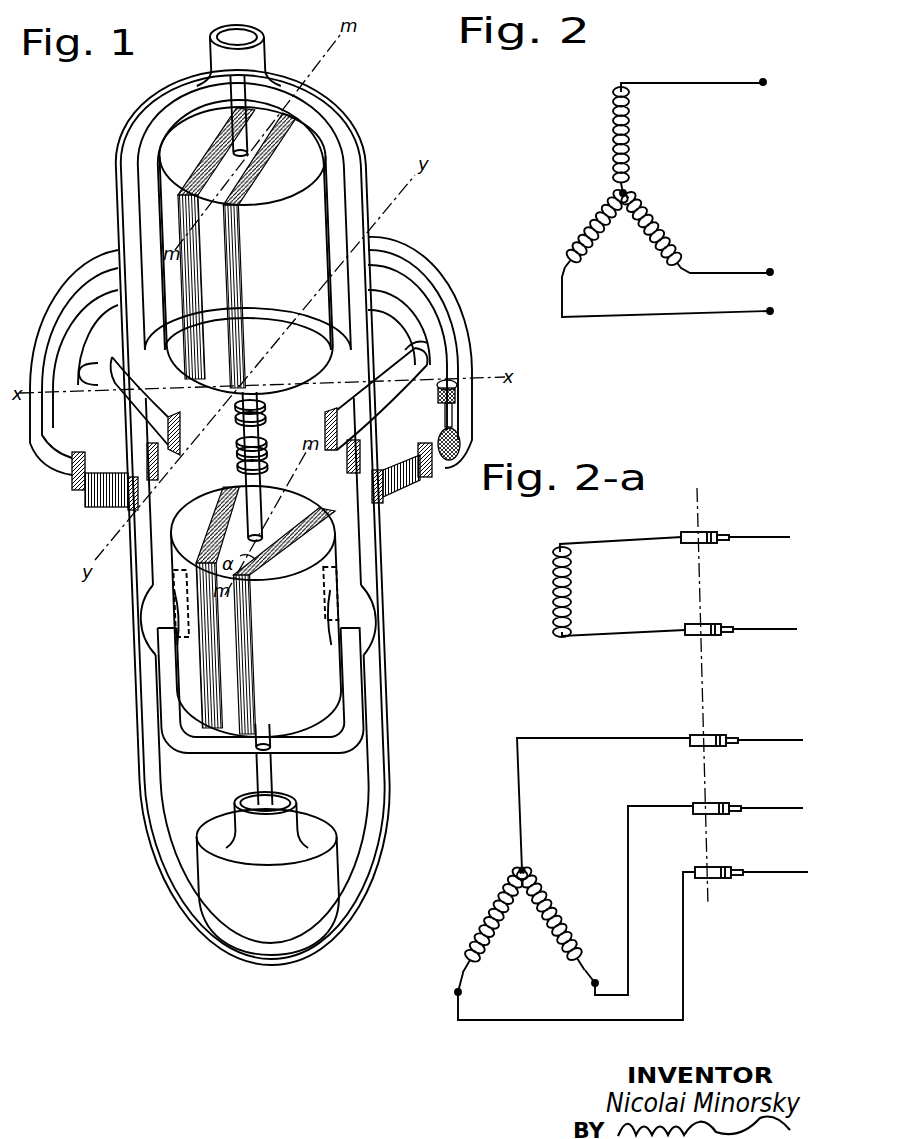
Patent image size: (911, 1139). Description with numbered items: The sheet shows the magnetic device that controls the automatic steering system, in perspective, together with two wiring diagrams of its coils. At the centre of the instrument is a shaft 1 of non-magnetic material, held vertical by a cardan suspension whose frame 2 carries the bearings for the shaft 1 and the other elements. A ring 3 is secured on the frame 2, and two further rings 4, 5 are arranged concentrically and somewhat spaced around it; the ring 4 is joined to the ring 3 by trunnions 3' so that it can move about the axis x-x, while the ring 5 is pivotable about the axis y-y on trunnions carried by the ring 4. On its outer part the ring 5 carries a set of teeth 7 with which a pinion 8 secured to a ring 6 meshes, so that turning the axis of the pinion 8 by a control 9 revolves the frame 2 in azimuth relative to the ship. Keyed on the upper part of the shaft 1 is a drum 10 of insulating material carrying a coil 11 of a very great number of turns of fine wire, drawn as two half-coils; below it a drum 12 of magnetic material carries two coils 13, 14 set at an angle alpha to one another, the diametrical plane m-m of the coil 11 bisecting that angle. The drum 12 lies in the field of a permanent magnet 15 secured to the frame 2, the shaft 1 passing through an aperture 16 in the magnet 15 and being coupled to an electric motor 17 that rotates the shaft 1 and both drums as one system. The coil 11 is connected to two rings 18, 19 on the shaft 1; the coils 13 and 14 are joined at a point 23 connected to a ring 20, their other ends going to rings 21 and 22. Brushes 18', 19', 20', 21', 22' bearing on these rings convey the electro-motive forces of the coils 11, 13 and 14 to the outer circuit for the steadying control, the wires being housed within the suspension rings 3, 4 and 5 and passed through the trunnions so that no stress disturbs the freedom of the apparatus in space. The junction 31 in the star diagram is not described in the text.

In FIG. 1, the shaft 1 is at (238, 127).
In FIG. 1, the frame 2 is at (343, 134).
In FIG. 1, the ring 3 is at (269, 401).
In FIG. 1, the trunnions 3' is at (253, 356).
In FIG. 1, the ring 4 is at (397, 274).
In FIG. 1, the ring 5 is at (412, 289).
In FIG. 1, the ring 6 is at (84, 284).
In FIG. 1, the set of teeth 7 is at (400, 490).
In FIG. 1, the pinion 8 is at (456, 463).
In FIG. 1, the control 9 is at (460, 393).
In FIG. 1, the drum 10 is at (292, 266).
In FIG. 1, the coil 11 is at (271, 148).
In FIG. 2, the coil 11 is at (632, 162).
In FIG. 2A, the coil 11 is at (576, 587).
In FIG. 1, the drum 12 is at (298, 631).
In FIG. 1, the coil 13 is at (217, 520).
In FIG. 2, the coil 13 is at (584, 238).
In FIG. 2A, the coil 13 is at (484, 930).
In FIG. 1, the coil 14 is at (337, 537).
In FIG. 2, the coil 14 is at (668, 235).
In FIG. 2A, the coil 14 is at (569, 921).
In FIG. 1, the permanent magnet 15 is at (162, 634).
In FIG. 1, the aperture 16 is at (267, 731).
In FIG. 1, the electric motor 17 is at (312, 912).
In FIG. 1, the ring 18 is at (272, 401).
In FIG. 2A, the ring 18 is at (735, 525).
In FIG. 2A, the brush 18' is at (740, 554).
In FIG. 1, the ring 19 is at (272, 418).
In FIG. 2A, the ring 19 is at (741, 615).
In FIG. 2A, the brush 19' is at (746, 643).
In FIG. 1, the ring 20 is at (266, 473).
In FIG. 2A, the ring 20 is at (660, 790).
In FIG. 2A, the brush 20' is at (754, 756).
In FIG. 1, the ring 21 is at (278, 442).
In FIG. 2A, the ring 21 is at (699, 885).
In FIG. 2A, the brush 21' is at (757, 822).
In FIG. 1, the ring 22 is at (233, 443).
In FIG. 2A, the ring 22 is at (633, 933).
In FIG. 2A, the brush 22' is at (759, 892).
In FIG. 2A, the point 23 is at (527, 871).
In FIG. 2, the neutral junction 31 is at (627, 193).